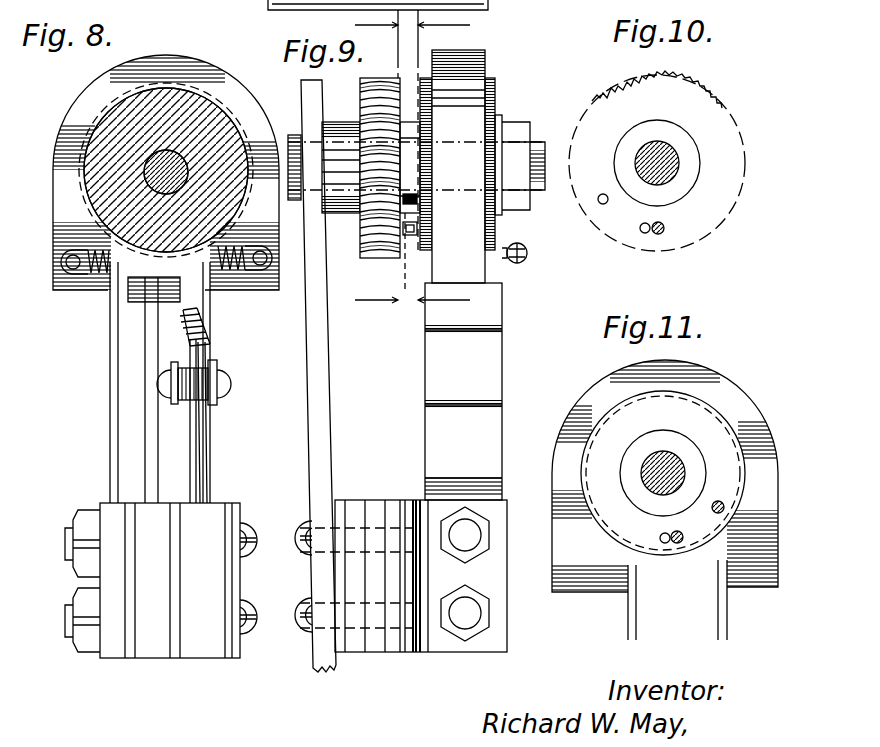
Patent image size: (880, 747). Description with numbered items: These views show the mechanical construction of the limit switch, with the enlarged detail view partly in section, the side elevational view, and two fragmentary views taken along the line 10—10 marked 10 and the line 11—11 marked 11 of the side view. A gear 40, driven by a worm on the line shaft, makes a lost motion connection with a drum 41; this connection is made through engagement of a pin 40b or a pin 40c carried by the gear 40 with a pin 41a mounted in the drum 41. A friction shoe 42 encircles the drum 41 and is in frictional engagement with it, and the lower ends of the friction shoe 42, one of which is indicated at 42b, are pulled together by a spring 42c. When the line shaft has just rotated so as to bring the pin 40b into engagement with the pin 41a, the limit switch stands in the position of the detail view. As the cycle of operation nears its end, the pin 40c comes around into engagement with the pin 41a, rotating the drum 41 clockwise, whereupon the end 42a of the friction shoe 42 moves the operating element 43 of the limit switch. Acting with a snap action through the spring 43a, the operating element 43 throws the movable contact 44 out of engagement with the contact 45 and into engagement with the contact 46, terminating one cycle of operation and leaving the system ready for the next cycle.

In FIG. 9, the section line 10— 10 is at (444, 160).
In FIG. 9, the section line 11— 11 is at (376, 160).
In FIG. 9, the gear 40 is at (386, 258).
In FIG. 10, the gear 40 is at (700, 92).
In FIG. 9, the pin 40b is at (400, 230).
In FIG. 10, the pin 40b is at (642, 233).
In FIG. 11, the pin 40b is at (680, 545).
In FIG. 9, the pin 40c is at (400, 202).
In FIG. 10, the pin 40c is at (600, 203).
In FIG. 11, the pin 40c is at (722, 514).
In FIG. 8, the drum 41 is at (208, 118).
In FIG. 9, the drum 41 is at (488, 100).
In FIG. 11, the drum 41 is at (598, 466).
In FIG. 9, the pin 41a is at (406, 290).
In FIG. 10, the pin 41a is at (663, 233).
In FIG. 11, the pin 41a is at (663, 544).
In FIG. 8, the friction shoe 42 is at (70, 116).
In FIG. 9, the friction shoe 42 is at (462, 235).
In FIG. 11, the friction shoe 42 is at (738, 402).
In FIG. 8, the end of friction shoe 42a is at (242, 285).
In FIG. 8, the spring eye 42b is at (55, 262).
In FIG. 8, the spring 42c is at (100, 272).
In FIG. 9, the spring 42c is at (517, 264).
In FIG. 8, the operating element 43 is at (212, 300).
In FIG. 8, the spring 43a is at (215, 338).
In FIG. 8, the movable contact 44 is at (192, 398).
In FIG. 8, the contact 45 is at (170, 385).
In FIG. 8, the contact 46 is at (218, 384).